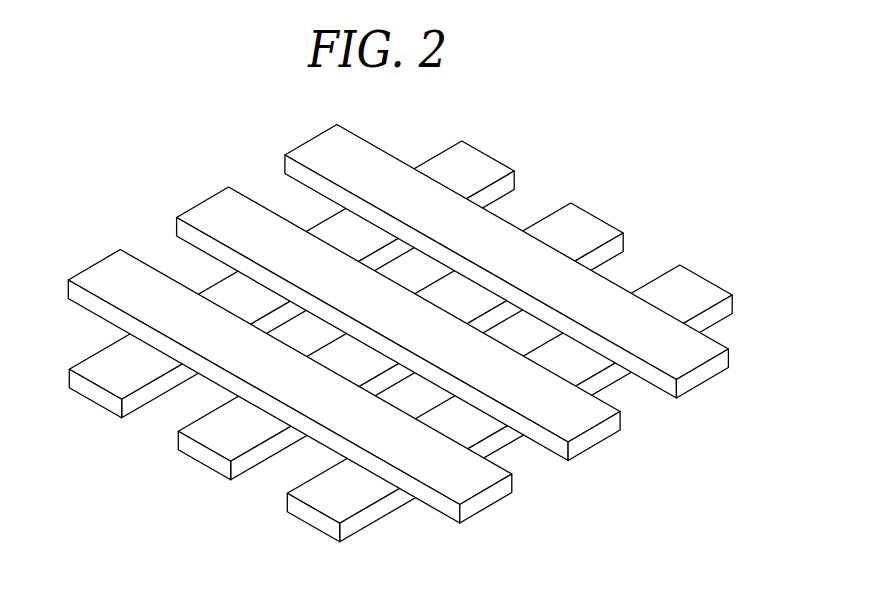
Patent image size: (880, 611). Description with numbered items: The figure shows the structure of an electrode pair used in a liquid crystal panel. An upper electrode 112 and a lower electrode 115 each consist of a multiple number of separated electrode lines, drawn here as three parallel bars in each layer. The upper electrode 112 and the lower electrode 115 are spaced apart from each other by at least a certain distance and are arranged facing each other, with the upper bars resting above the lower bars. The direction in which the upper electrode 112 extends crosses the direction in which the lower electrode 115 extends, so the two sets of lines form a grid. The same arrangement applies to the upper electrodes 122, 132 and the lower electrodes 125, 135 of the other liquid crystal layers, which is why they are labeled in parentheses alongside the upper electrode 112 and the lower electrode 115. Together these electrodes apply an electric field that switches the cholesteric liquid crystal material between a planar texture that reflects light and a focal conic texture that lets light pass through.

The upper electrode 112 is at (417, 337).
The upper electrode 122 is at (417, 337).
The upper electrode 132 is at (490, 545).
The lower electrode 115 is at (387, 353).
The lower electrode 125 is at (387, 353).
The lower electrode 135 is at (42, 400).